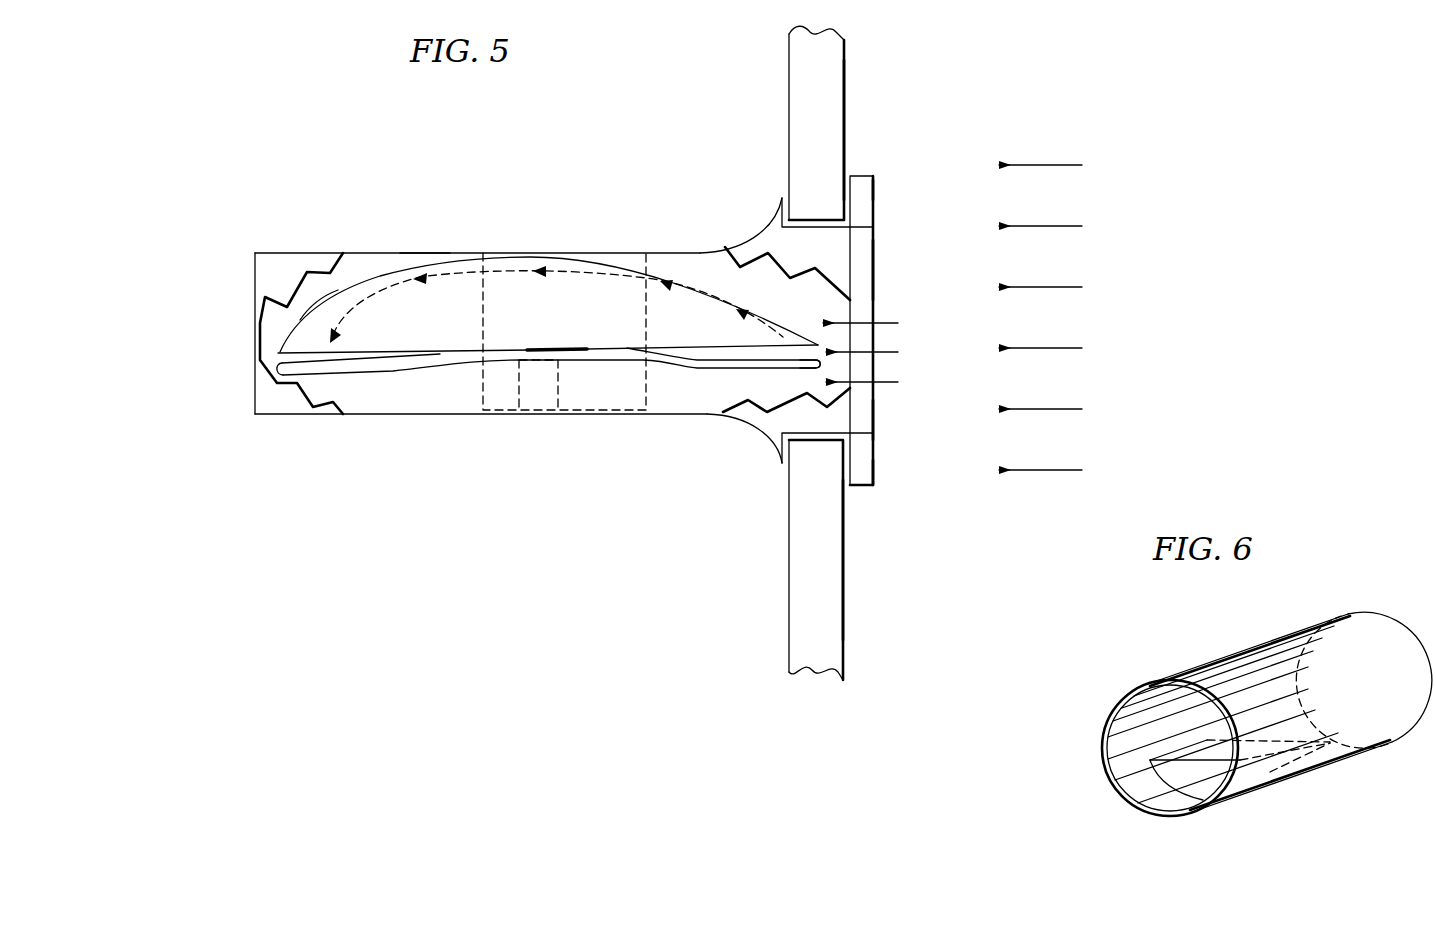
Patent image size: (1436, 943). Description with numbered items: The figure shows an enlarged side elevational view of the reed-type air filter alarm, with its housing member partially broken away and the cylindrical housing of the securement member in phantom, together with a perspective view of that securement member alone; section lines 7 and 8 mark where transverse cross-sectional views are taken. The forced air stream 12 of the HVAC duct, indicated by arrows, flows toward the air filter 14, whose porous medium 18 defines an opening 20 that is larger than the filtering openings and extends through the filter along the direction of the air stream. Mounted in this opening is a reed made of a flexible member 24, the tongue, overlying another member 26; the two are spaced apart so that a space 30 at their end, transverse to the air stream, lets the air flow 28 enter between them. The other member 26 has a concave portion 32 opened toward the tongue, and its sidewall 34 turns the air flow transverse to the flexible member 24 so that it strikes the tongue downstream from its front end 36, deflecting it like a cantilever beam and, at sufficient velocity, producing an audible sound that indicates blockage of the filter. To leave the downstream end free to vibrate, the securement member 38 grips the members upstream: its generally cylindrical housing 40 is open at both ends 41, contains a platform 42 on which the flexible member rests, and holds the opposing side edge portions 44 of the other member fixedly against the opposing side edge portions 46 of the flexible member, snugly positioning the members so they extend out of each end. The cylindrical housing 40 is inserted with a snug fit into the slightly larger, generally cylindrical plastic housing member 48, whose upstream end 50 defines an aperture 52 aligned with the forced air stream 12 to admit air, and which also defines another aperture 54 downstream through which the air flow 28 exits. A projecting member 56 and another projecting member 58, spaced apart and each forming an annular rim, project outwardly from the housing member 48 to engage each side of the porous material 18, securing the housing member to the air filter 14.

In FIG. 5, the section line 7- 7 is at (164, 578).
In FIG. 5, the section line 8- 8 is at (957, 70).
In FIG. 5, the forced air stream 12 is at (1028, 165).
In FIG. 5, the air filter 14 is at (815, 88).
In FIG. 5, the porous medium 18 is at (850, 52).
In FIG. 5, the opening 20 is at (875, 417).
In FIG. 5, the flexible member 24 is at (393, 371).
In FIG. 5, the other member 26 is at (381, 282).
In FIG. 5, the air flow 28 is at (450, 287).
In FIG. 5, the space 30 is at (282, 354).
In FIG. 5, the concave portion 32 is at (337, 296).
In FIG. 5, the sidewall 34 is at (425, 262).
In FIG. 5, the front end 36 is at (818, 378).
In FIG. 5, the securement member 38 is at (605, 408).
In FIG. 6, the securement member 38 is at (1256, 642).
In FIG. 6, the cylindrical housing 40 is at (1365, 728).
In FIG. 6, the ends 41 is at (1390, 652).
In FIG. 6, the platform 42 is at (1178, 780).
In FIG. 5, the opposing side edge portions of other member 44 is at (527, 350).
In FIG. 5, the opposing side edge portions of flexible member 46 is at (580, 353).
In FIG. 5, the housing member 48 is at (762, 240).
In FIG. 5, the end 50 is at (870, 182).
In FIG. 5, the aperture 52 is at (875, 272).
In FIG. 5, the another aperture 54 is at (260, 322).
In FIG. 5, the projecting member 56 is at (780, 207).
In FIG. 5, the another projecting member 58 is at (875, 188).